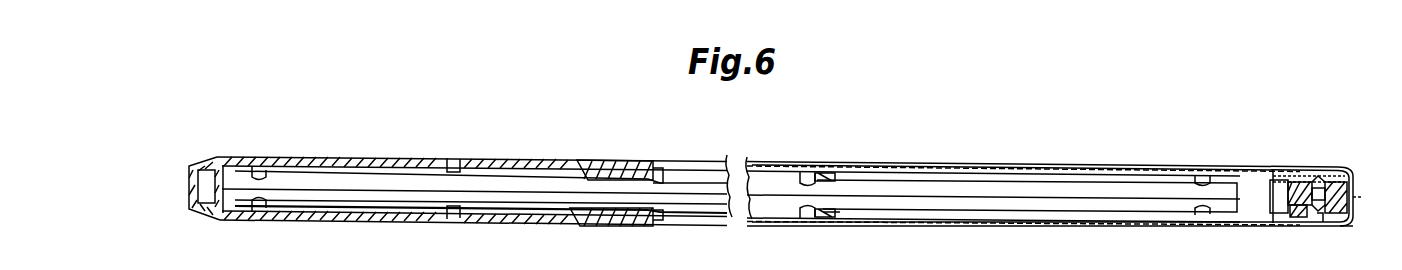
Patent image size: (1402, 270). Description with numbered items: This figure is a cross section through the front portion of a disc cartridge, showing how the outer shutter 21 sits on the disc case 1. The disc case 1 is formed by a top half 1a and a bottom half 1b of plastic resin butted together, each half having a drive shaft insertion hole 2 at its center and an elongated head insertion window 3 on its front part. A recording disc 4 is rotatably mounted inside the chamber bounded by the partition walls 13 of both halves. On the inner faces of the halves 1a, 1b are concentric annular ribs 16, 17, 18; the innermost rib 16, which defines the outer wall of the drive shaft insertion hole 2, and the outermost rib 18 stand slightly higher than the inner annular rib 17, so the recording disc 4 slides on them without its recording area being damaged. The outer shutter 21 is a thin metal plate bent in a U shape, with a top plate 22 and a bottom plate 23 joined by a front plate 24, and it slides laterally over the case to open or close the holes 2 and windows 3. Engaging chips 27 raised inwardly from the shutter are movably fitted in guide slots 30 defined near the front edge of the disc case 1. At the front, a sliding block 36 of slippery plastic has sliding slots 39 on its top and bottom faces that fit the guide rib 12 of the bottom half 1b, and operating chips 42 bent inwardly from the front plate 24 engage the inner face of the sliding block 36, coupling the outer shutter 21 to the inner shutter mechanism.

The disc case 1 is at (484, 184).
The top half 1a is at (331, 158).
The bottom half 1b is at (322, 225).
The drive shaft insertion hole 2 is at (674, 228).
The head insertion window 3 is at (838, 220).
The recording disc 4 is at (862, 196).
The guide rib 12 is at (1351, 189).
The partition wall 13 is at (210, 210).
The innermost annular rib 16 is at (803, 178).
The inner annular rib 17 is at (446, 160).
The outermost annular rib 18 is at (262, 176).
The outer shutter 21 is at (1092, 168).
The top plate 22 is at (980, 171).
The bottom plate 23 is at (975, 222).
The front plate 24 is at (1353, 224).
The engaging chip 27 is at (1336, 180).
The guide slot 30 is at (1302, 180).
The sliding block 36 is at (1288, 170).
The sliding slot 39 is at (1266, 200).
The operating chip 42 is at (1363, 197).